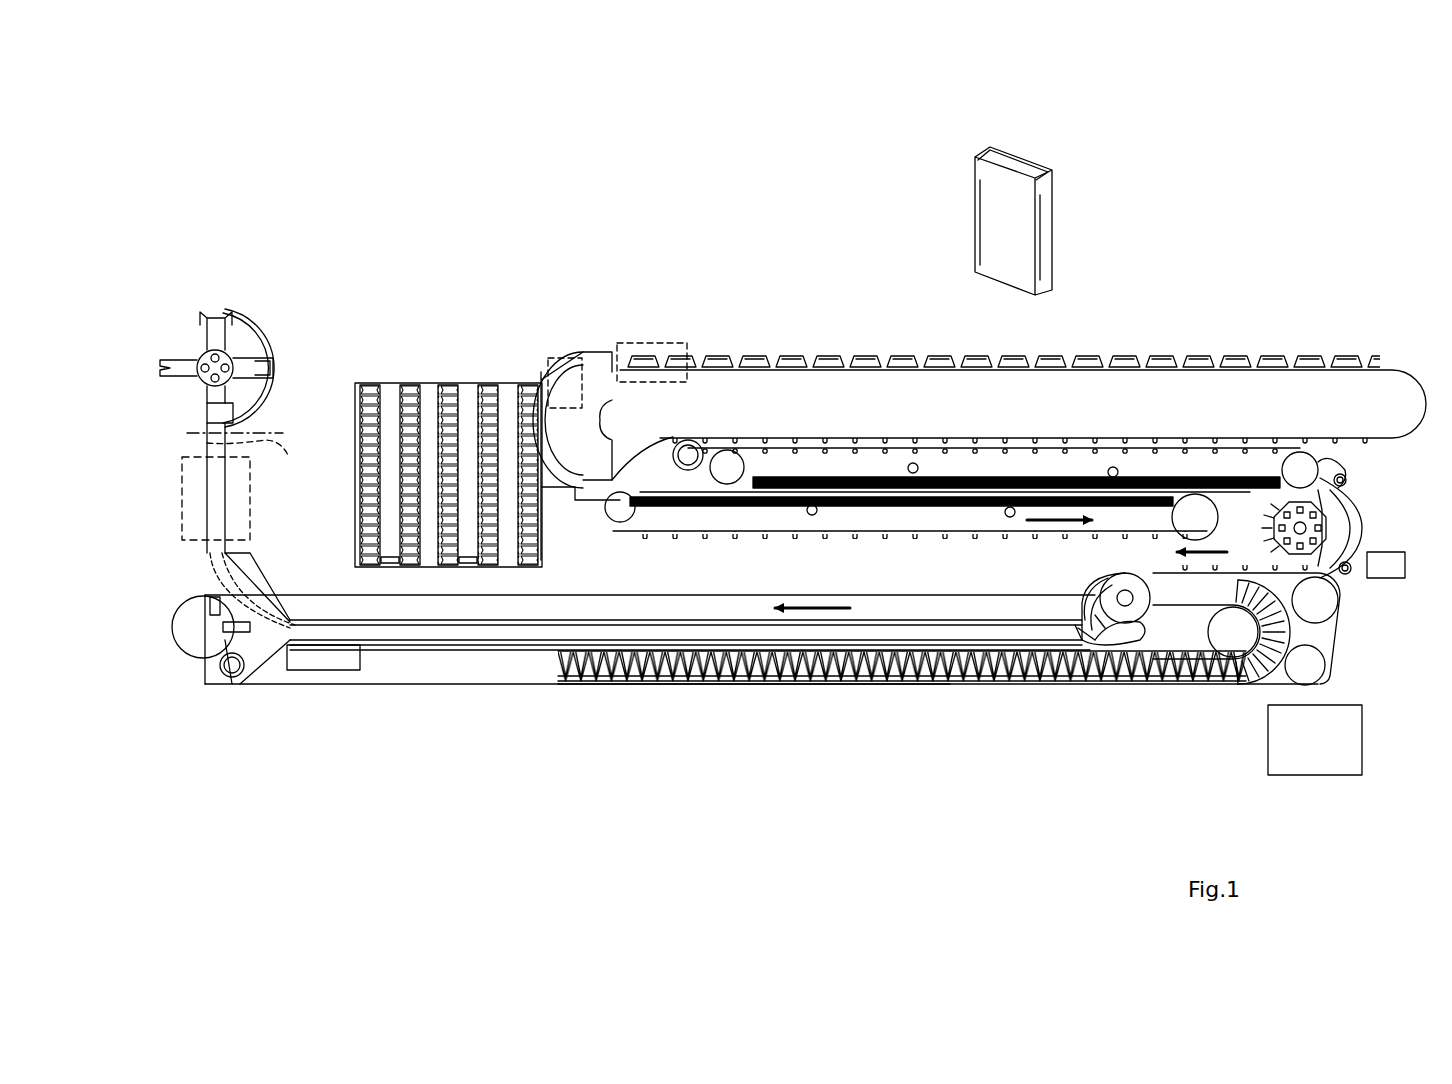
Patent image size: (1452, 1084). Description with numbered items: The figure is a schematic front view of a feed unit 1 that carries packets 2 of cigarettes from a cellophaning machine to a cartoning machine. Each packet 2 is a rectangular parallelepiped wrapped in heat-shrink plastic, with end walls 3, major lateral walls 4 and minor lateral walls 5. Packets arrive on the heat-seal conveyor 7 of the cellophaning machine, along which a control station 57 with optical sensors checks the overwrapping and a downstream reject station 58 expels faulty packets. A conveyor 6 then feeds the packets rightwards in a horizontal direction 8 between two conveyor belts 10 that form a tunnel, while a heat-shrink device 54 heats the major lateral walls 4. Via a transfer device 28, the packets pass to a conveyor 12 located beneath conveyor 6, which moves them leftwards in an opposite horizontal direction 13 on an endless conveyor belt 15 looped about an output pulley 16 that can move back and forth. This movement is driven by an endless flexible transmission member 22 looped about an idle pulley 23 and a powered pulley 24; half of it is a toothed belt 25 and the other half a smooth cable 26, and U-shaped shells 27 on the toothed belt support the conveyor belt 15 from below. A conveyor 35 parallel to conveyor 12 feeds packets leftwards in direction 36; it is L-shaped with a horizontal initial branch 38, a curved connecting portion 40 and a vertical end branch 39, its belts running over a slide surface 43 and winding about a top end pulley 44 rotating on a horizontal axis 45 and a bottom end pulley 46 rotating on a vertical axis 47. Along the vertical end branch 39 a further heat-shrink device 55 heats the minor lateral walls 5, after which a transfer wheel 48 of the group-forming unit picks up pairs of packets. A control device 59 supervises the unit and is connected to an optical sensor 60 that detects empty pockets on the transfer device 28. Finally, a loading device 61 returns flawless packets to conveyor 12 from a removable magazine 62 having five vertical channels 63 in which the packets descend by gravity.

The feed unit 1 is at (650, 782).
The packet of cigarettes 2 is at (1025, 350).
The end wall 3 is at (1010, 168).
The major lateral wall 4 is at (975, 215).
The minor lateral wall 5 is at (1050, 216).
The conveyor 6 is at (946, 538).
The heat-seal conveyor 7 is at (1291, 340).
The horizontal direction 8 is at (1058, 523).
The conveyor belt 10 is at (1345, 470).
The conveyor 12 is at (1157, 705).
The horizontal direction 13 is at (1215, 540).
The endless conveyor belt 15 is at (1337, 627).
The output pulley 16 is at (1135, 588).
The endless flexible transmission member 22 is at (615, 695).
The idle pulley 23 is at (195, 640).
The powered pulley 24 is at (1210, 632).
The toothed belt 25 is at (472, 652).
The smooth cable 26 is at (710, 595).
The U-shaped shell 27 is at (950, 678).
The transfer device 28 is at (1368, 528).
The conveyor 35 is at (812, 715).
The horizontal direction 36 is at (815, 606).
The horizontal initial branch 38 is at (750, 690).
The vertical end branch 39 is at (262, 508).
The curved connecting portion 40 is at (232, 583).
The slide surface 43 is at (400, 635).
The top end pulley 44 is at (252, 442).
The horizontal axis of rotation 45 is at (253, 424).
The bottom end pulley 46 is at (1068, 688).
The vertical axis of rotation 47 is at (1086, 688).
The transfer wheel 48 is at (216, 300).
The heat-shrink device 54 is at (878, 418).
The further heat-shrink device 55 is at (195, 545).
The control station 57 is at (655, 340).
The reject station 58 is at (553, 355).
The control device 59 is at (1322, 755).
The optical sensor 60 is at (1405, 565).
The loading device 61 is at (442, 360).
The removable magazine 62 is at (393, 395).
The vertical channel 63 is at (370, 418).